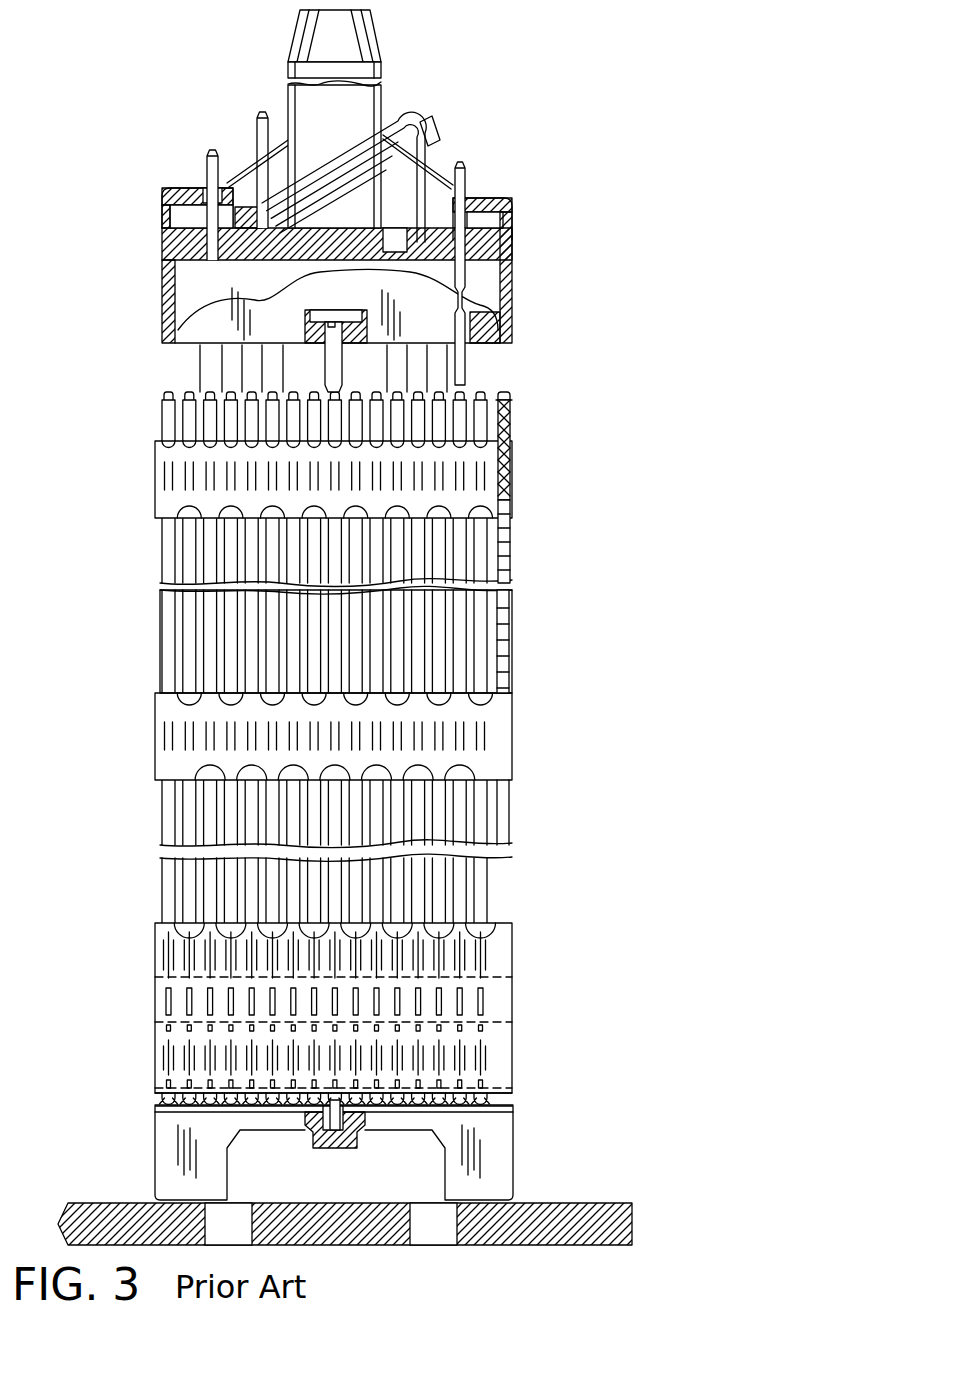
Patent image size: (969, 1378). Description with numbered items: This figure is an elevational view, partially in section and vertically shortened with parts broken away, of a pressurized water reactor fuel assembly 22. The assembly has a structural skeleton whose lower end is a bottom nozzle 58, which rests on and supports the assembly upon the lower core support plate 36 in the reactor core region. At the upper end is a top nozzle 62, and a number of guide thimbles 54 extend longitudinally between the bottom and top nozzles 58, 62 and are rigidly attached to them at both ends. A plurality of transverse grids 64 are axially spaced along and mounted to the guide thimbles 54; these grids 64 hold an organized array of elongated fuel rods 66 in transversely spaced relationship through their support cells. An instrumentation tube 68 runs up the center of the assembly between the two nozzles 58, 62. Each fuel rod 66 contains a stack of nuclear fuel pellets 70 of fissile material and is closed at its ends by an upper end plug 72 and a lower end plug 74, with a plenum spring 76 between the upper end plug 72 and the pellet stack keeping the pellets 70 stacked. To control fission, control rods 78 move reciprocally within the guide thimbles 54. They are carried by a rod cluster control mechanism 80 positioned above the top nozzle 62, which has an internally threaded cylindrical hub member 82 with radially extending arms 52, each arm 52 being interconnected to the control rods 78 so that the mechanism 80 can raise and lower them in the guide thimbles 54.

The fuel assembly 22 is at (600, 255).
The lower core support plate 36 is at (555, 1205).
The arms 52 is at (266, 162).
The guide thimbles 54 is at (204, 378).
The bottom nozzle 58 is at (525, 1149).
The top nozzle 62 is at (520, 240).
The transverse grids 64 is at (157, 488).
The fuel rods 66 is at (158, 648).
The instrumentation tube 68 is at (340, 1140).
The nuclear fuel pellets 70 is at (507, 552).
The upper end plug 72 is at (510, 398).
The lower end plug 74 is at (513, 1103).
The plenum spring 76 is at (512, 462).
The control rods 78 is at (500, 312).
The rod cluster control mechanism 80 is at (436, 109).
The cylindrical hub member 82 is at (385, 97).